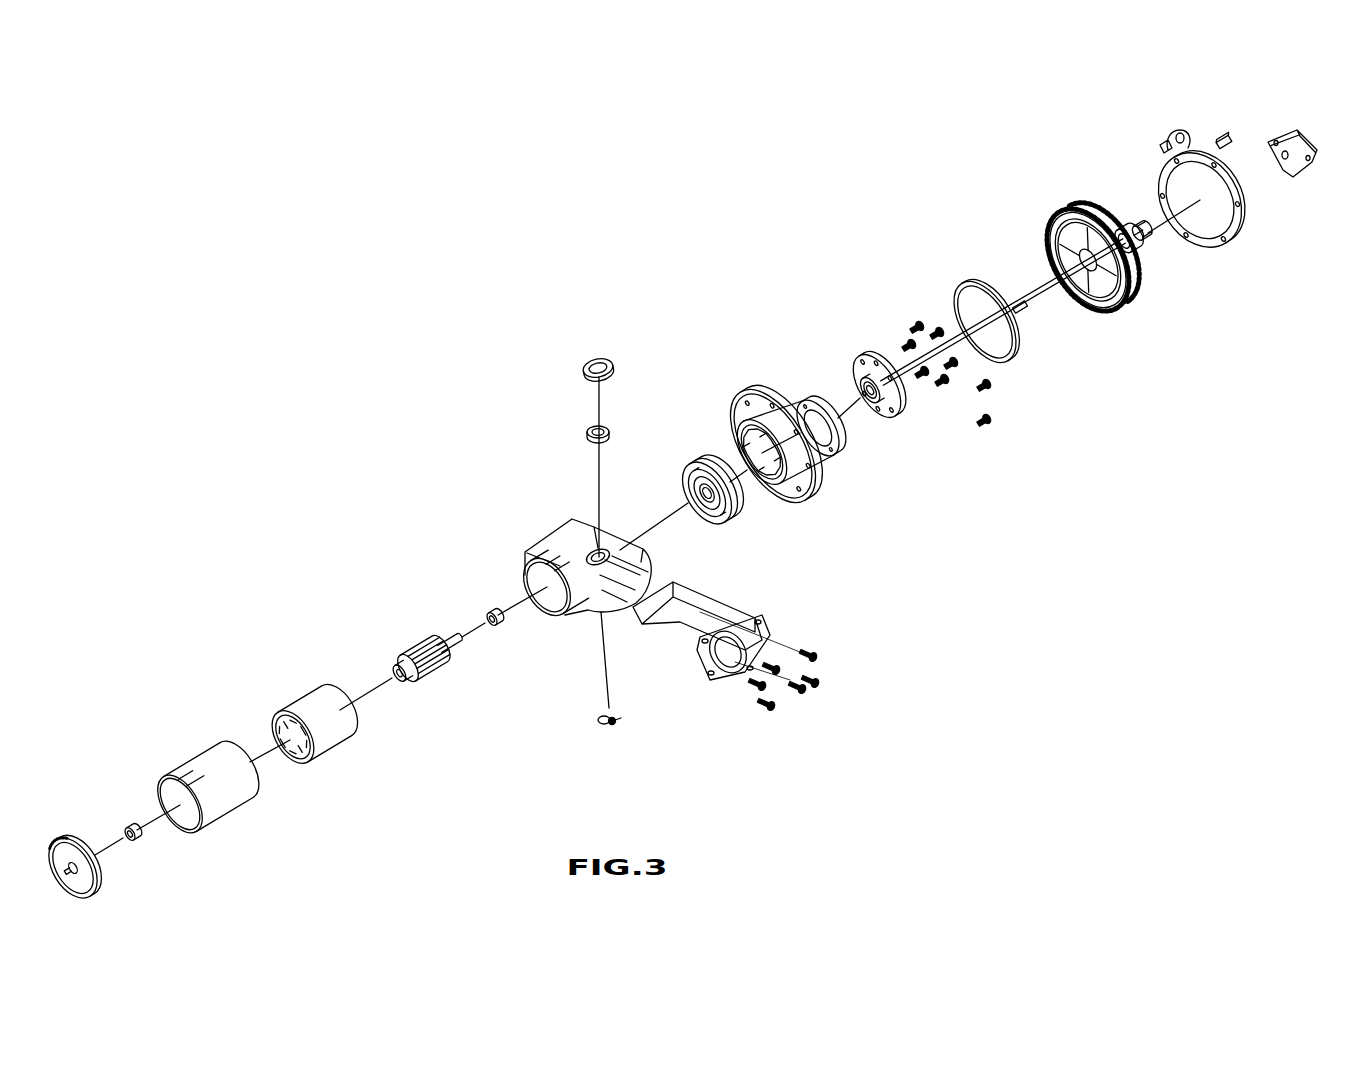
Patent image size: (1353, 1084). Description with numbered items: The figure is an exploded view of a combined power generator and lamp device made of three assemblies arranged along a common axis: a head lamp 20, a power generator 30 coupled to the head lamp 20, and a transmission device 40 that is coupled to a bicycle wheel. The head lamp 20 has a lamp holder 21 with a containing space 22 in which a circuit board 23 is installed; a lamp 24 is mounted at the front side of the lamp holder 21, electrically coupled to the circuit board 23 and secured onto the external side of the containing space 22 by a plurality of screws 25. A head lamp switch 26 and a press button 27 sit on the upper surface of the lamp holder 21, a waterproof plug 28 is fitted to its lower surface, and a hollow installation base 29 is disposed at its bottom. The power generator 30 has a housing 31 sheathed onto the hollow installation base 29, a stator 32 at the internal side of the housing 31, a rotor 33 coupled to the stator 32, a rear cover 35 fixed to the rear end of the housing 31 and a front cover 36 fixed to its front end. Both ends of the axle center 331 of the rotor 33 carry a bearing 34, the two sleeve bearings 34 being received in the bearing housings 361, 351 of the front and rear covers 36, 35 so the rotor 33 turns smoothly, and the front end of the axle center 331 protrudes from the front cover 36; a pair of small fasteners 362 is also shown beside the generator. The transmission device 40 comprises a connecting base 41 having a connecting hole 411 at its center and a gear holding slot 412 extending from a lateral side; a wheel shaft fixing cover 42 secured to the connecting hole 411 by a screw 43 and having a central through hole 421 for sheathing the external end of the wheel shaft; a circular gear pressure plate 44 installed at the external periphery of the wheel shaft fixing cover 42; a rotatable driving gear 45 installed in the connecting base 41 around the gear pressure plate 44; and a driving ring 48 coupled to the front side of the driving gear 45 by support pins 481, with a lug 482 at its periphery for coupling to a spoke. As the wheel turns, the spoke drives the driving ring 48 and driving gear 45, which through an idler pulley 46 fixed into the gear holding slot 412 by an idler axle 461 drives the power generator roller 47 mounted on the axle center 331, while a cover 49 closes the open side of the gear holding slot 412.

The head lamp 20 is at (878, 658).
The lamp holder 21 is at (606, 568).
The containing space 22 is at (650, 568).
The circuit board 23 is at (675, 583).
The lamp 24 is at (753, 620).
The screws 25 is at (805, 650).
The head lamp switch 26 is at (612, 430).
The press button 27 is at (612, 367).
The waterproof plug 28 is at (620, 722).
The hollow installation base 29 is at (552, 608).
The power generator 30 is at (433, 548).
The housing 31 is at (230, 805).
The stator 32 is at (333, 738).
The rotor 33 is at (429, 662).
The axle center 331 is at (452, 640).
The bearing 34 is at (140, 843).
The rear cover 35 is at (100, 888).
The bearing housing 351 is at (84, 845).
The front cover 36 is at (711, 495).
The bearing housing 361 is at (705, 525).
The screws 362 is at (992, 421).
The transmission device 40 is at (1221, 72).
The connecting base 41 is at (794, 432).
The connecting hole 411 is at (773, 492).
The gear holding slot 412 is at (810, 407).
The wheel shaft fixing cover 42 is at (898, 407).
The through hole 421 is at (862, 405).
The screw 43 is at (915, 322).
The gear pressure plate 44 is at (1012, 350).
The driving gear 45 is at (1125, 305).
The idler pulley 46 is at (1137, 262).
The idler axle 461 is at (1026, 312).
The power generator roller 47 is at (1148, 242).
The driving ring 48 is at (1218, 182).
The support pins 481 is at (1233, 150).
The lug 482 is at (1187, 133).
The cover 49 is at (1303, 168).